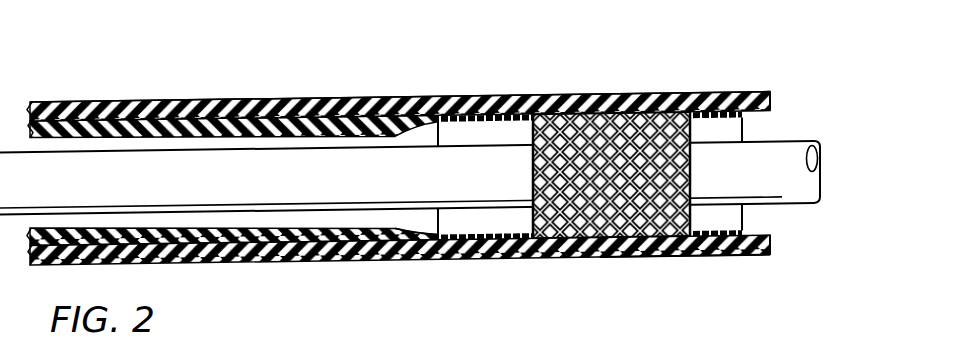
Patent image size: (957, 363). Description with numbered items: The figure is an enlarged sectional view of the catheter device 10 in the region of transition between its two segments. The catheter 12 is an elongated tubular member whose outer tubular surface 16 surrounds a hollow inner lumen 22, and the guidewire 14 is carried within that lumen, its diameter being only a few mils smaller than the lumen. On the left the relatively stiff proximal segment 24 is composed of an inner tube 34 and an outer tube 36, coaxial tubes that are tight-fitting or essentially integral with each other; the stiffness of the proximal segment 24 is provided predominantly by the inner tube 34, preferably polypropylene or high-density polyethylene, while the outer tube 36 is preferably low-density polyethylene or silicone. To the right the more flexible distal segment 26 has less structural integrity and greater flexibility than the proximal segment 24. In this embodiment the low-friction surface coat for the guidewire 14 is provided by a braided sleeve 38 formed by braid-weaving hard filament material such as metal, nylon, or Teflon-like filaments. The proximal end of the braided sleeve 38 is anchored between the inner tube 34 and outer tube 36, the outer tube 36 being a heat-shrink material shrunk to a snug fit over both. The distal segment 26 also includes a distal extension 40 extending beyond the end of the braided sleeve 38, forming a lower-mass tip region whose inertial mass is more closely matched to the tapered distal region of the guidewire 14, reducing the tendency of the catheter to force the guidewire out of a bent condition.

The catheter device 10 is at (400, 76).
The catheter 12 is at (573, 140).
The guidewire 14 is at (419, 154).
The outer tubular surface 16 is at (398, 94).
The inner lumen 22 is at (234, 96).
The proximal segment 24 is at (398, 273).
The distal segment 26 is at (685, 287).
The inner tube 34 is at (426, 279).
The outer tube 36 is at (234, 275).
The braided sleeve 38 is at (620, 140).
The distal extension 40 is at (786, 205).